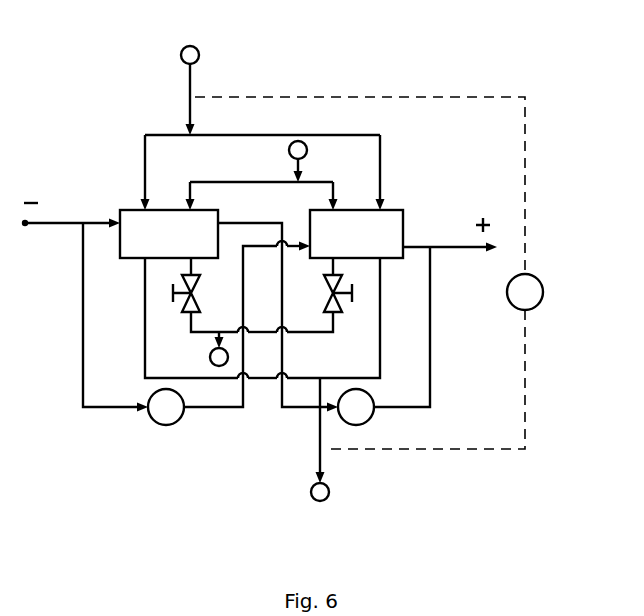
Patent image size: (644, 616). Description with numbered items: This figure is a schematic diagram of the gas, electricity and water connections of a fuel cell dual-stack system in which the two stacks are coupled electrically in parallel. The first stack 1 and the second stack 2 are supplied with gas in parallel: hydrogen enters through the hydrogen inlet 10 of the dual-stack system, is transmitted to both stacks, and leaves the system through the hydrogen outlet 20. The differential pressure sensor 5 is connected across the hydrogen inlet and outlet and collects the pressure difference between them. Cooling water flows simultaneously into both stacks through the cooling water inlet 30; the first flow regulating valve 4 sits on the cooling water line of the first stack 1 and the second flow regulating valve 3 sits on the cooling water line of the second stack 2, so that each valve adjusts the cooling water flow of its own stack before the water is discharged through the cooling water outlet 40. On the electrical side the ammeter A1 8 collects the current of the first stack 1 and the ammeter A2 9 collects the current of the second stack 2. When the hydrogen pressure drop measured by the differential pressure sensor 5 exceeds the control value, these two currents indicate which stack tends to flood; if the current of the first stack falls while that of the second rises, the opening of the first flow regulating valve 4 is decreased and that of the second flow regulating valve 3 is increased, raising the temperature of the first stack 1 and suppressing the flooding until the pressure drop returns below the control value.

The first stack 1 is at (135, 220).
The second stack 2 is at (392, 220).
The second flow regulating valve 3 is at (345, 312).
The first flow regulating valve 4 is at (182, 312).
The differential pressure sensor 5 is at (535, 278).
The ammeter A1 8 is at (370, 420).
The ammeter A2 9 is at (164, 421).
The hydrogen inlet 10 is at (192, 48).
The hydrogen outlet 20 is at (320, 500).
The cooling water inlet 30 is at (302, 143).
The cooling water outlet 40 is at (218, 359).